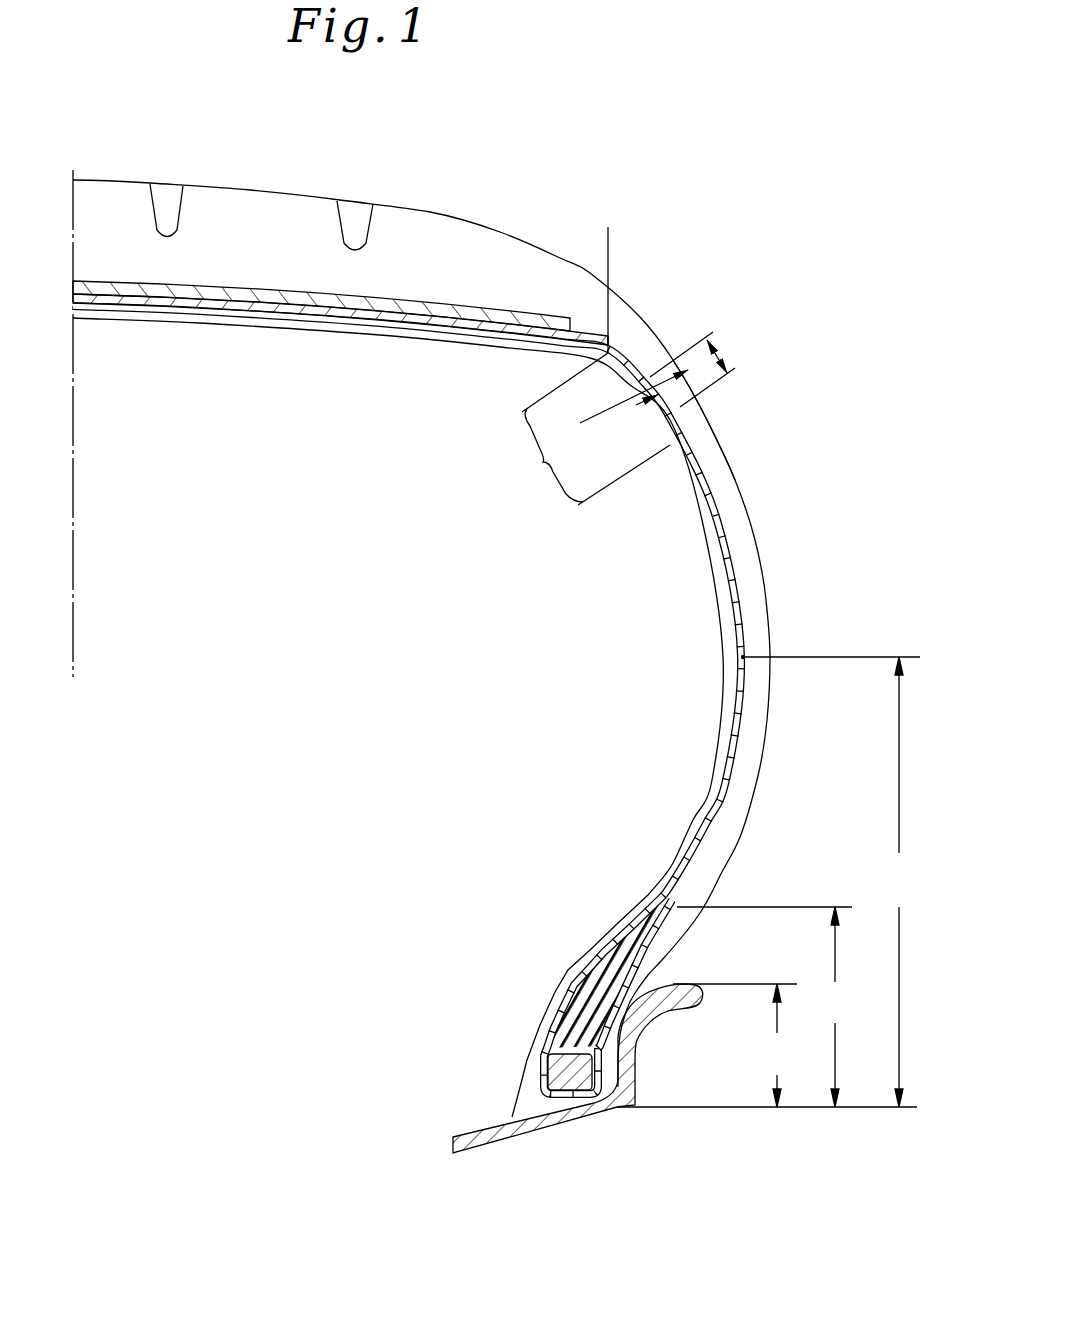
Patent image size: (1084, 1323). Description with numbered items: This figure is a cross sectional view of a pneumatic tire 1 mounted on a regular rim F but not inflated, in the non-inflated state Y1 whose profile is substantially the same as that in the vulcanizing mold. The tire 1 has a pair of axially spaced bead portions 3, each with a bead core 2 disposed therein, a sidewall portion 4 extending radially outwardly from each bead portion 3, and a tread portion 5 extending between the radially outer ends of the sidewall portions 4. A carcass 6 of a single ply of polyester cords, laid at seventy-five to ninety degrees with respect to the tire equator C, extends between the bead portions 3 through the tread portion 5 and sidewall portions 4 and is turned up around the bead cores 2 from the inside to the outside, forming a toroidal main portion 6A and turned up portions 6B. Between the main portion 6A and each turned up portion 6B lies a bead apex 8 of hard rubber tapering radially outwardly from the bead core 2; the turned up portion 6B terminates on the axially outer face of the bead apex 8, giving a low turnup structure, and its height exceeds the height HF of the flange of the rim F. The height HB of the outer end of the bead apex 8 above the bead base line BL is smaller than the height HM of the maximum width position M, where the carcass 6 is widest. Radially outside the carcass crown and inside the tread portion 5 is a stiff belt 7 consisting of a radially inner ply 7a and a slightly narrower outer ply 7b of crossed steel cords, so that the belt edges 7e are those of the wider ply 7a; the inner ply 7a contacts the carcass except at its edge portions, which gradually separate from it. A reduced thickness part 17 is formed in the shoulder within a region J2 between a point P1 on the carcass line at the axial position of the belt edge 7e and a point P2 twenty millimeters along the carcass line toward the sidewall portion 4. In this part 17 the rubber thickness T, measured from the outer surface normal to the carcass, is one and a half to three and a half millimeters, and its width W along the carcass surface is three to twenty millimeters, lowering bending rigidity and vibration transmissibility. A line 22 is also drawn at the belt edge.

The pneumatic tire 1 is at (692, 308).
The bead core 2 is at (552, 1072).
The bead portion 3 is at (556, 994).
The sidewall portion 4 is at (781, 562).
The tread portion 5 is at (247, 187).
The carcass 6 is at (722, 769).
The toroidal main portion 6A is at (597, 953).
The turned up portion 6B is at (597, 1033).
The belt 7 is at (391, 367).
The inner ply 7a is at (280, 300).
The outer ply 7b is at (338, 312).
The belt edge 7e is at (614, 323).
The bead apex 8 is at (588, 1015).
The reduced thickness part 17 is at (724, 402).
The belt edge reference line 22 is at (610, 260).
The tire equator C is at (73, 620).
The non-inflated state Y1 is at (540, 222).
The width W is at (718, 352).
The rubber thickness T is at (622, 407).
The region J2 is at (587, 429).
The point P1 is at (590, 351).
The point P2 is at (668, 462).
The maximum width position M is at (752, 650).
The height of the maximum width position HM is at (834, 882).
The height of the bead apex HB is at (766, 1007).
The height of the rim flange HF is at (735, 1045).
The regular rim F is at (530, 1137).
The bead base line BL is at (727, 1108).